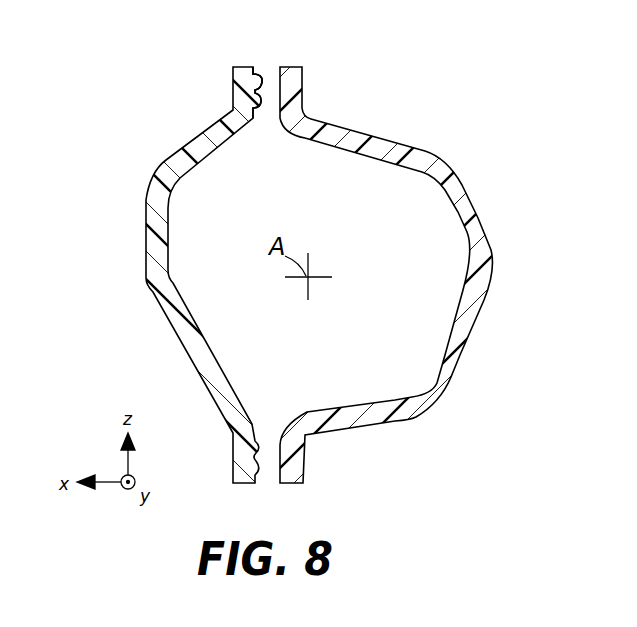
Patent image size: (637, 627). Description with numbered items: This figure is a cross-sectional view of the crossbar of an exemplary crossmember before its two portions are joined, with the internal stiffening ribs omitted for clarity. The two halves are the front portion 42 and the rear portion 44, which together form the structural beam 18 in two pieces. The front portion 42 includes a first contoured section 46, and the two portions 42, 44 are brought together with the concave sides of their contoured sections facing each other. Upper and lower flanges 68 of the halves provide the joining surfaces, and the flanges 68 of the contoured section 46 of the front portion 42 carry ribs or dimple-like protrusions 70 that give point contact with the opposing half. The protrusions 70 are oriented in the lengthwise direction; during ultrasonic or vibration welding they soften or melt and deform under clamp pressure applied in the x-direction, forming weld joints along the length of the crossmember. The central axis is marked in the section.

The structural beam 18 is at (453, 367).
The front portion 42 is at (163, 149).
The rear portion 44 is at (427, 142).
The first contoured section 46 is at (153, 249).
The flanges 68 is at (233, 85).
The protrusions 70 is at (258, 74).